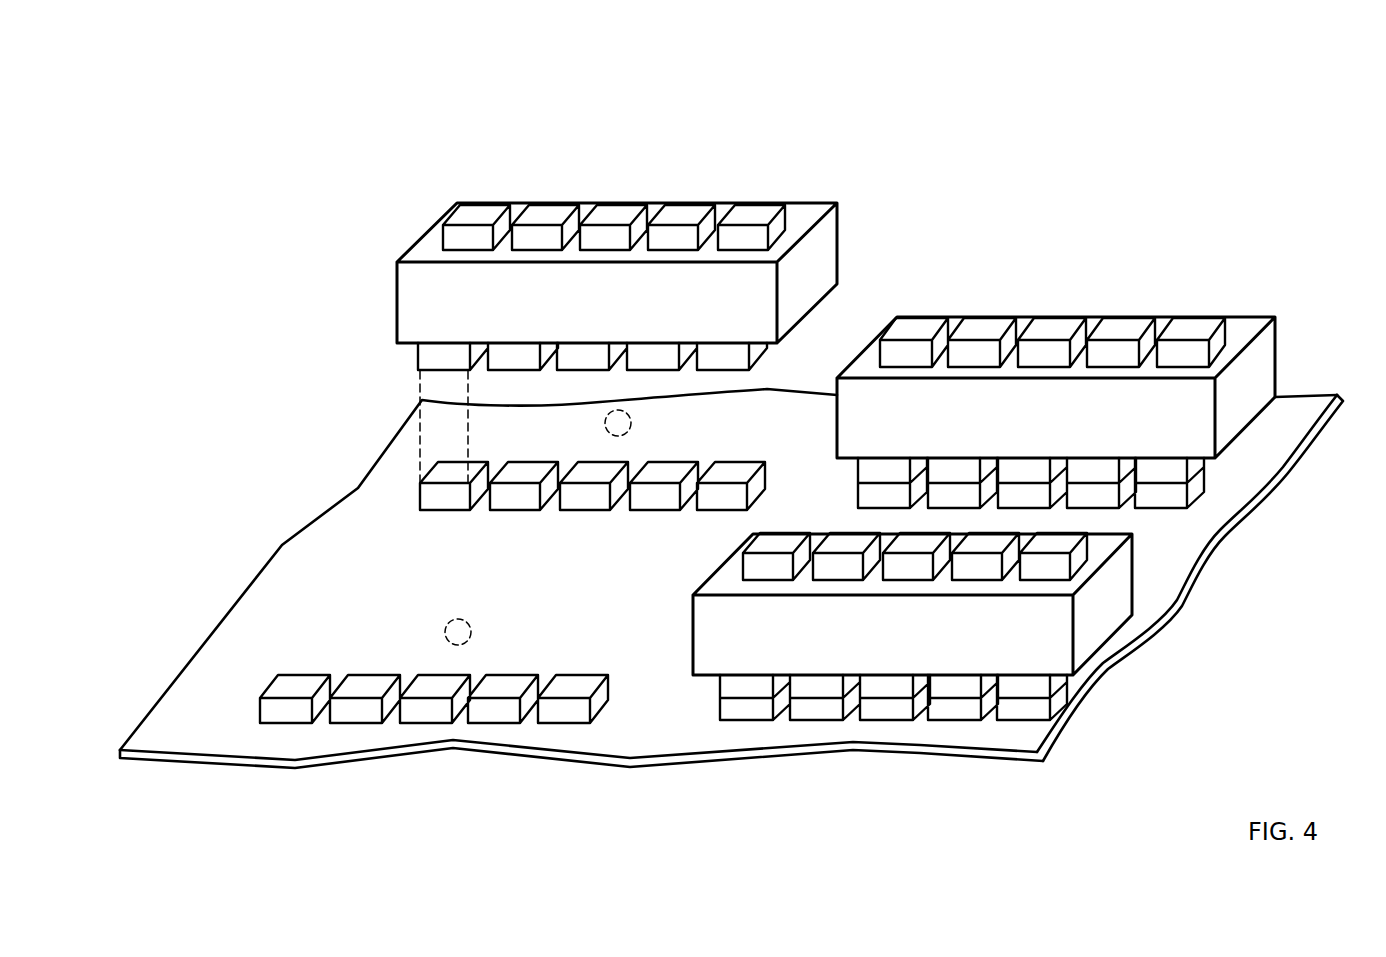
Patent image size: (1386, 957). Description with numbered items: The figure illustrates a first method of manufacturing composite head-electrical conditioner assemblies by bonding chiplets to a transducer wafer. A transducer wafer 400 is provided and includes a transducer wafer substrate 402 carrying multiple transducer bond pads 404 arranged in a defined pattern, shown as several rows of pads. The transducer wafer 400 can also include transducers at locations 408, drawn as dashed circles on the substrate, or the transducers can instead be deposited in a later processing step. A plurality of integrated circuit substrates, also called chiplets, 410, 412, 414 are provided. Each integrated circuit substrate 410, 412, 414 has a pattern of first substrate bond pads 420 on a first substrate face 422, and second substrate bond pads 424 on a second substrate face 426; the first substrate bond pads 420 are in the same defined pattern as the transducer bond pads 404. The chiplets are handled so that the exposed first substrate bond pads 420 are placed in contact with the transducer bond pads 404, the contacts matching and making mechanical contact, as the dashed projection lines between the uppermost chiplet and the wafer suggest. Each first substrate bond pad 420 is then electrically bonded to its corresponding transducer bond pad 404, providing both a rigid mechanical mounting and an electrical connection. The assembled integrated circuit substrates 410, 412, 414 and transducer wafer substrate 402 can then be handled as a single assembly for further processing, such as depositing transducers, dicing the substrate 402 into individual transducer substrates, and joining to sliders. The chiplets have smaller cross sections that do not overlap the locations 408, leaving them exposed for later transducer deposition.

The transducer wafer 400 is at (160, 403).
The transducer wafer substrate 402 is at (293, 533).
The transducer bond pads 404 is at (693, 510).
The transducer locations 408 is at (452, 620).
The integrated circuit substrate 410 is at (837, 205).
The integrated circuit substrate 412 is at (1275, 317).
The integrated circuit substrate 414 is at (1133, 557).
The first substrate bond pads 420 is at (720, 371).
The first substrate face 422 is at (822, 323).
The second substrate bond pads 424 is at (753, 215).
The second substrate face 426 is at (423, 222).